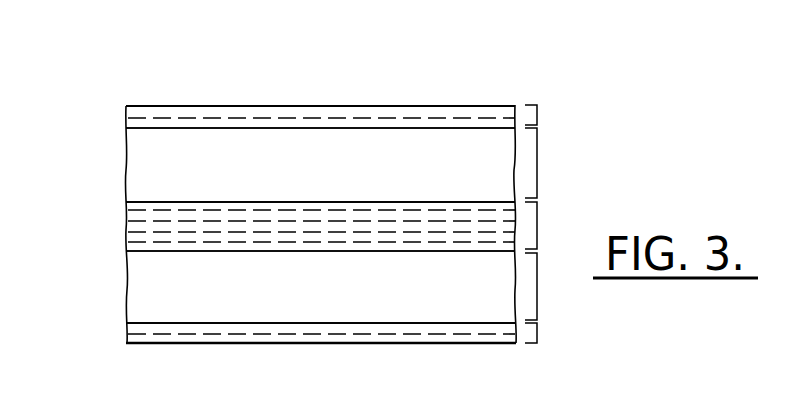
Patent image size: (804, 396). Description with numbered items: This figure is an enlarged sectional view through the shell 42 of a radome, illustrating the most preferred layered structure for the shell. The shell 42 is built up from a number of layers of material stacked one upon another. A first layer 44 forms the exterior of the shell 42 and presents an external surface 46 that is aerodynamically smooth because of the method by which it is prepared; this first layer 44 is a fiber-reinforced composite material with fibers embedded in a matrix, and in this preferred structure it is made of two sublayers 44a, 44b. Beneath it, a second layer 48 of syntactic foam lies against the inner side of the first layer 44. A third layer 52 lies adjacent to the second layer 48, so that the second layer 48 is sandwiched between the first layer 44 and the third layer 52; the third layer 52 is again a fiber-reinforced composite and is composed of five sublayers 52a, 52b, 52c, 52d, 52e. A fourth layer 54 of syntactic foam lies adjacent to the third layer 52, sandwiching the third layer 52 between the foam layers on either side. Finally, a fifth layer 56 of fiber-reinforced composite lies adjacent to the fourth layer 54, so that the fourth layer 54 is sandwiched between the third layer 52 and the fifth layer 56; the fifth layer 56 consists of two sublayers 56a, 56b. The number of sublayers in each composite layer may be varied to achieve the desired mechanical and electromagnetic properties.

The shell 42 is at (103, 48).
The first layer 44 is at (537, 111).
The sublayer of first layer 44a is at (127, 107).
The sublayer of first layer 44b is at (127, 118).
The external surface 46 is at (250, 106).
The second layer 48 is at (537, 162).
The third layer 52 is at (537, 218).
The sublayer of third layer 52a is at (126, 202).
The sublayer of third layer 52b is at (126, 210).
The sublayer of third layer 52c is at (126, 221).
The sublayer of third layer 52d is at (126, 232).
The sublayer of third layer 52e is at (126, 243).
The fourth layer 54 is at (537, 282).
The fifth layer 56 is at (537, 331).
The sublayer of fifth layer 56a is at (126, 323).
The sublayer of fifth layer 56b is at (127, 334).